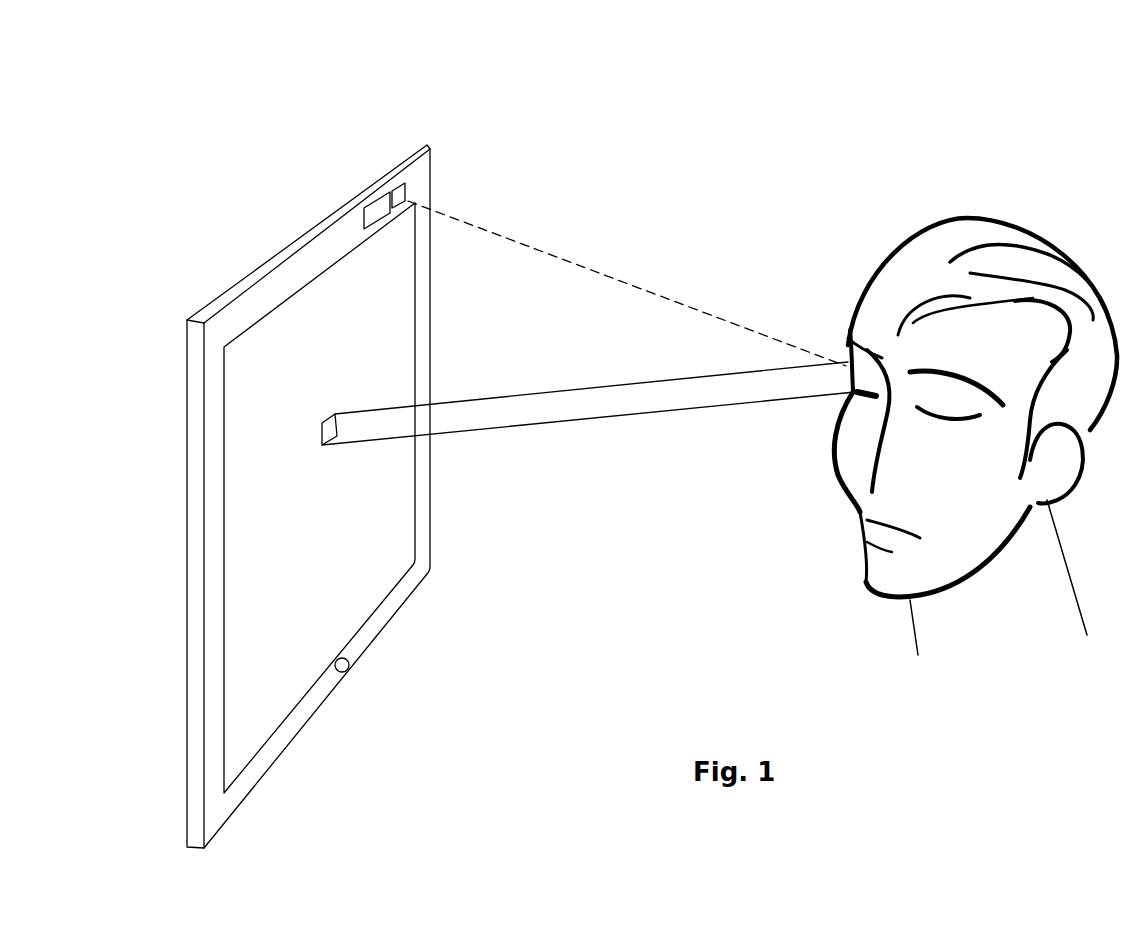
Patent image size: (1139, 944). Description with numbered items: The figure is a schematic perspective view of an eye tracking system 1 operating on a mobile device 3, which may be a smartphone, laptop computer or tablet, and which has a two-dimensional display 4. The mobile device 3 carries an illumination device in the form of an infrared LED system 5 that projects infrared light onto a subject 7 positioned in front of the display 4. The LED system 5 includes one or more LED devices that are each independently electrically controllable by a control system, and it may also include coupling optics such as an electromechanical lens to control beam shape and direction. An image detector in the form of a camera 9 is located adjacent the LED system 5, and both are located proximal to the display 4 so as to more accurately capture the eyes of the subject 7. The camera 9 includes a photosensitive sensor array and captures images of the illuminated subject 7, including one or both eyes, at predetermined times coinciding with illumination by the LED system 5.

The eye tracking system 1 is at (668, 112).
The mobile device 3 is at (197, 347).
The two-dimensional display 4 is at (387, 560).
The infrared LED system 5 is at (380, 200).
The subject 7 is at (912, 231).
The camera 9 is at (425, 141).